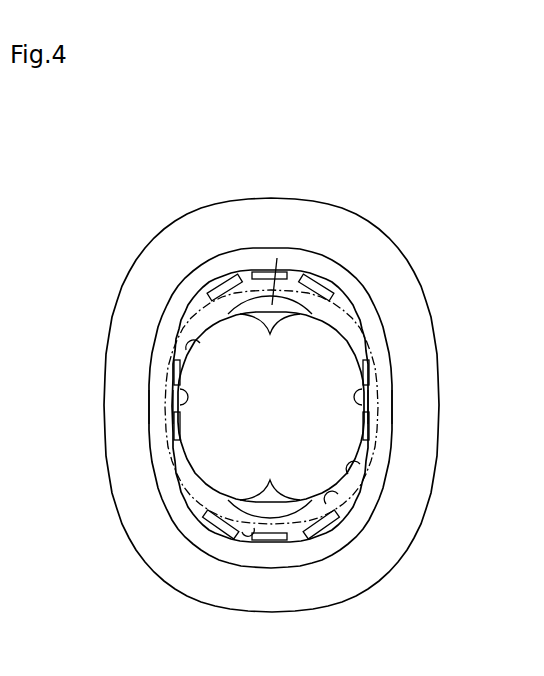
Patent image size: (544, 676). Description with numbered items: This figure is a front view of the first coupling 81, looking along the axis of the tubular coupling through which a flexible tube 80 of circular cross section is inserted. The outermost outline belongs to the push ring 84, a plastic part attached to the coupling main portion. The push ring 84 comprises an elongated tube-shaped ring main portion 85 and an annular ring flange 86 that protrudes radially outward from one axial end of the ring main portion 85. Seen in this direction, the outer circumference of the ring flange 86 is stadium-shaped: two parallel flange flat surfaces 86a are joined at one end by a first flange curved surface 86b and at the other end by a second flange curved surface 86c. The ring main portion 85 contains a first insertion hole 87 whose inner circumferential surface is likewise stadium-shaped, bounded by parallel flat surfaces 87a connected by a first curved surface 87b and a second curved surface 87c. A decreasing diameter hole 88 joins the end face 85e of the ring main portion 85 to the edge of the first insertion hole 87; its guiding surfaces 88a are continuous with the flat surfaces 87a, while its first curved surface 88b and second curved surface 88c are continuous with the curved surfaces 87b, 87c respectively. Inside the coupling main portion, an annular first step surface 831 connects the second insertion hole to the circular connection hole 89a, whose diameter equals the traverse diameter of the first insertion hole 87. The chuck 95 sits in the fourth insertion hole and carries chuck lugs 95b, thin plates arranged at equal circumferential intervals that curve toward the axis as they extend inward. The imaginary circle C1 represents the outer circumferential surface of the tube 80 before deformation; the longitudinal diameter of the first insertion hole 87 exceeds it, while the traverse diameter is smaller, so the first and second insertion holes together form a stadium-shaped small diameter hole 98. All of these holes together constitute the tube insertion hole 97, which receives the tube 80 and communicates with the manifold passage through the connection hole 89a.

The first coupling 81 is at (141, 216).
The ring main portion 85 is at (168, 290).
The first insertion hole 87 is at (372, 465).
The chuck 95 is at (345, 492).
The imaginary circle C1 is at (165, 455).
The chuck lugs 95b is at (270, 335).
The first curved surface 88b is at (300, 260).
The second curved surface 88c is at (302, 552).
The guiding surfaces 88a is at (175, 445).
The first curved surface 87b is at (250, 270).
The second curved surface 87c is at (245, 533).
The flat surfaces 87a is at (172, 383).
The flange flat surfaces 86a is at (160, 415).
The first flange curved surface 86b is at (276, 200).
The second flange curved surface 86c is at (270, 612).
The ring flange 86 is at (380, 577).
The tube 80 is at (357, 272).
The push ring 84 is at (390, 244).
The end face 85e is at (403, 297).
The connection hole 89a is at (188, 343).
The first step surface 831 is at (345, 306).
The decreasing diameter hole 88 is at (178, 470).
The small diameter hole 98 is at (190, 500).
The tube insertion hole 97 is at (357, 513).